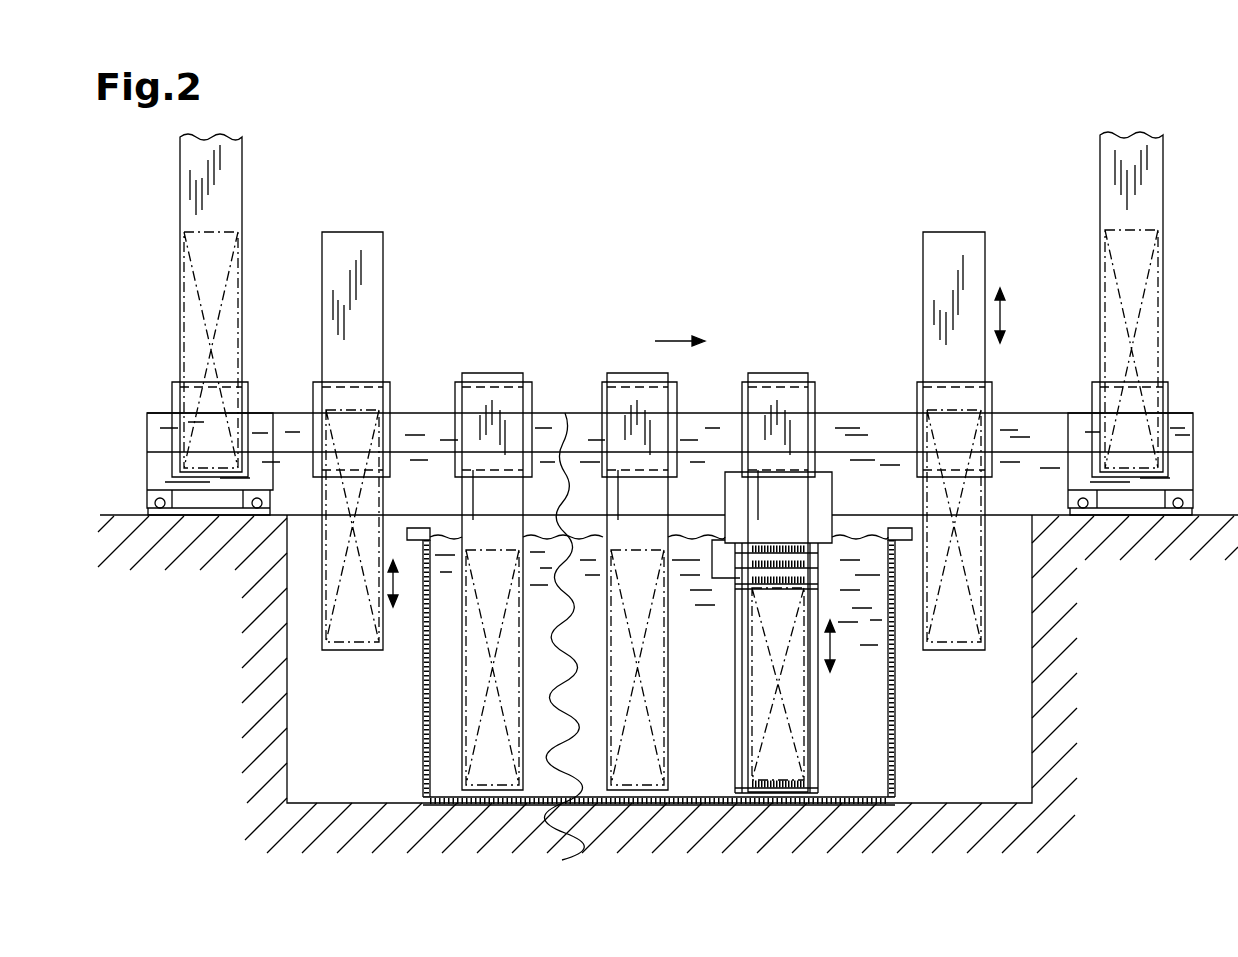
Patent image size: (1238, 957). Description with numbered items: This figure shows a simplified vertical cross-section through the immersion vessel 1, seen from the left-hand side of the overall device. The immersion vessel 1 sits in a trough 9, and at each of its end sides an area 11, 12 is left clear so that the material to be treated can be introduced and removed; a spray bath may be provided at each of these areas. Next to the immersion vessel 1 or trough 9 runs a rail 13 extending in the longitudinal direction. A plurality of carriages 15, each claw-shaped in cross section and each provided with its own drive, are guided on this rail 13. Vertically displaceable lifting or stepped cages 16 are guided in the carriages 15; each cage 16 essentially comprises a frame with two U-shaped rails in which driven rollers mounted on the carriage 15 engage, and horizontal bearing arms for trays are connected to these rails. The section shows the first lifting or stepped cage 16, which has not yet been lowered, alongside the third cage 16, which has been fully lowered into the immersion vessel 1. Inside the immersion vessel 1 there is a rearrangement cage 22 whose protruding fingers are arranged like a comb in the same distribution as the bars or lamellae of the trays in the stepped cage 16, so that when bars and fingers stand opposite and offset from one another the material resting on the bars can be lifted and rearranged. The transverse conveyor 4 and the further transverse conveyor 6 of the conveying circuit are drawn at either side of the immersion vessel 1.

The immersion vessel 1 is at (422, 728).
The transverse conveyor 4 is at (1180, 468).
The further transverse conveyor 6 is at (157, 475).
The trough 9 is at (1040, 645).
The clear area 11 is at (315, 712).
The clear area 12 is at (1018, 710).
The rail 13 is at (1035, 422).
The carriage 15 is at (392, 385).
The lifting or stepped cage 16 is at (348, 250).
The rearrangement cage 22 is at (815, 697).